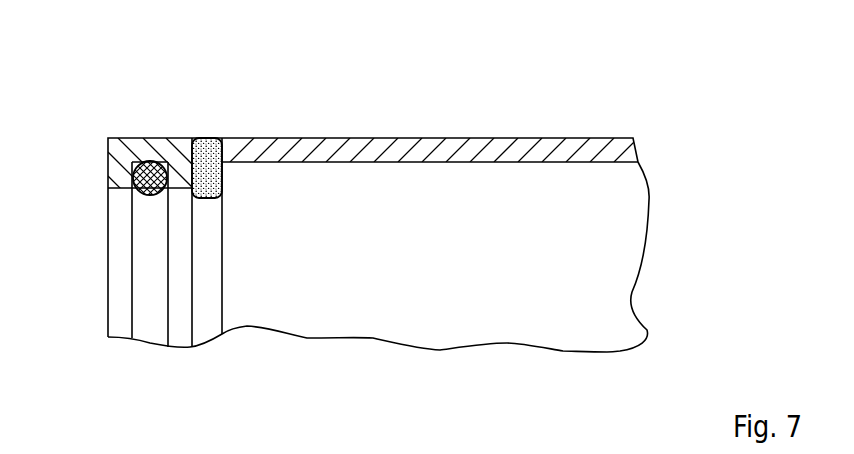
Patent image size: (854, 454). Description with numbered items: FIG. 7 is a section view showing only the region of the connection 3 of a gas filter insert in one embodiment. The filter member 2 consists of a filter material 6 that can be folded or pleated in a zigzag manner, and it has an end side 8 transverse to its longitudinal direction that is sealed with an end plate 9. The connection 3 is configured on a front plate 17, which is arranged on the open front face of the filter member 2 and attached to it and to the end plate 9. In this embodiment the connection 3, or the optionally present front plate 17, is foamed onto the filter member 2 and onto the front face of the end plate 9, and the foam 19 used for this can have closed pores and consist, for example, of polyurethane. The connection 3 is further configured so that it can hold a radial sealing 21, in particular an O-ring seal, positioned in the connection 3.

The filter member 2 is at (539, 193).
The connection 3 is at (99, 158).
The filter material 6 is at (482, 190).
The end side 8 is at (320, 160).
The end plate 9 is at (400, 150).
The front plate 17 is at (158, 152).
The foam 19 is at (201, 145).
The radial sealing 21 is at (148, 200).